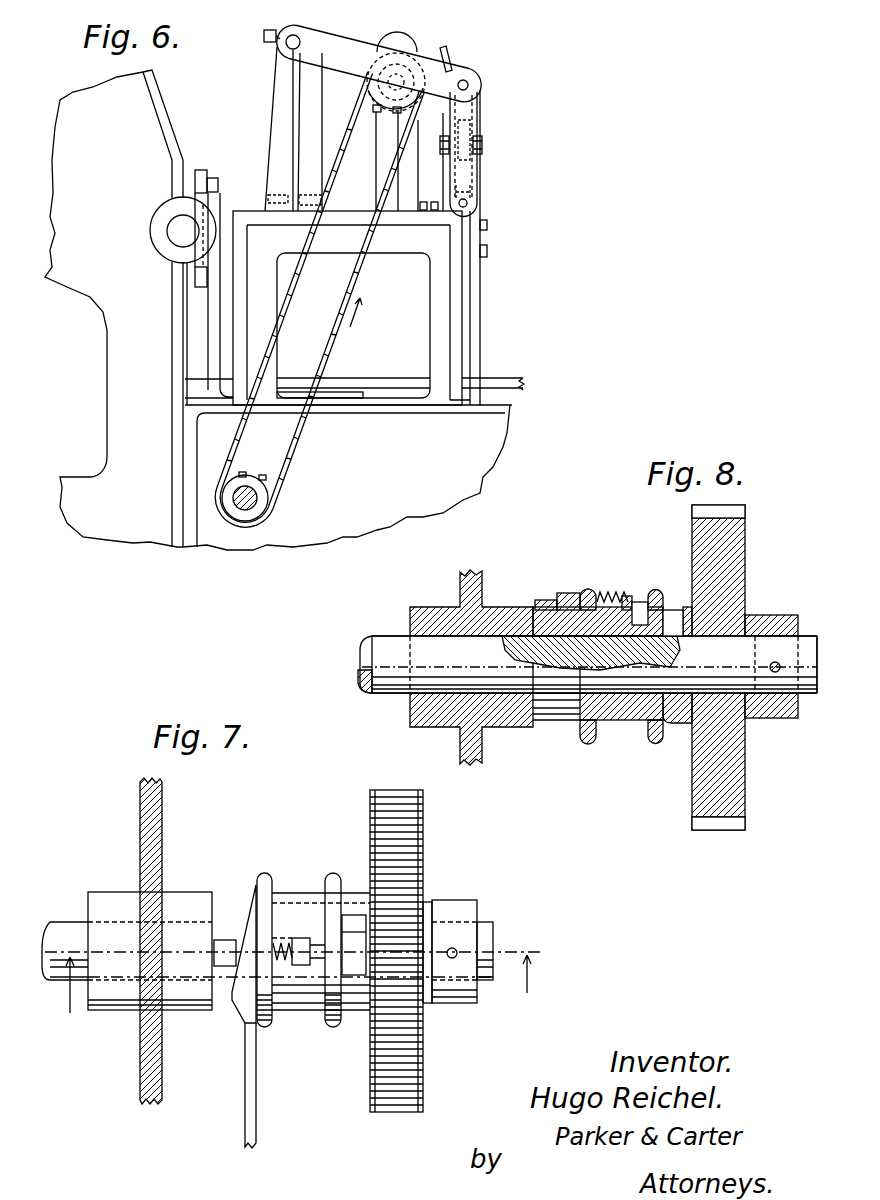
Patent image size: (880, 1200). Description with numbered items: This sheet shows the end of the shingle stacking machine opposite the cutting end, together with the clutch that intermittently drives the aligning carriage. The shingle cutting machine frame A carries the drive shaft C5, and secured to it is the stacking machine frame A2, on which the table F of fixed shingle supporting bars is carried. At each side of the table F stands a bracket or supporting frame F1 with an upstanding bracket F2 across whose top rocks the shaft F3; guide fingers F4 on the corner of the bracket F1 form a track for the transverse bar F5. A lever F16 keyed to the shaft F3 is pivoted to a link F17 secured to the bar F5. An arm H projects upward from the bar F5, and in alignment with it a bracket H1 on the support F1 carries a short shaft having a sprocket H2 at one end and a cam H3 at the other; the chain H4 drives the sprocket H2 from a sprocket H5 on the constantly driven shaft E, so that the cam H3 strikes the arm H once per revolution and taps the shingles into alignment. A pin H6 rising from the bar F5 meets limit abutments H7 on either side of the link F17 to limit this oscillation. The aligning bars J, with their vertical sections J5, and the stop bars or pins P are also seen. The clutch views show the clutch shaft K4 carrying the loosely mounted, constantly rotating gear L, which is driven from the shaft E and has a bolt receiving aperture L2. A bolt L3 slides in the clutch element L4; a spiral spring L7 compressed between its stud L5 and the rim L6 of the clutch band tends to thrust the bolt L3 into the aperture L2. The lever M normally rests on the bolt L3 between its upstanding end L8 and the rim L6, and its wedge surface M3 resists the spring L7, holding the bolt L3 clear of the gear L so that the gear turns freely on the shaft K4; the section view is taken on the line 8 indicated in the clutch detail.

In FIG. 6, the shingle cutting machine frame A is at (113, 423).
In FIG. 6, the stacking machine frame A2 is at (483, 433).
In FIG. 8, the stacking machine frame A2 is at (465, 585).
In FIG. 7, the stacking machine frame A2 is at (143, 828).
In FIG. 6, the drive shaft C5 is at (154, 308).
In FIG. 6, the stop bars or pins P is at (215, 262).
In FIG. 6, the vertical section J5 is at (210, 332).
In FIG. 6, the aligning bars J is at (343, 393).
In FIG. 6, the table F is at (495, 378).
In FIG. 6, the bracket or supporting frame F1 is at (453, 290).
In FIG. 6, the upstanding bracket F2 is at (277, 120).
In FIG. 6, the rock shaft F3 is at (282, 53).
In FIG. 6, the guide fingers F4 is at (477, 178).
In FIG. 6, the transverse bar F5 is at (468, 190).
In FIG. 6, the lever F16 is at (338, 47).
In FIG. 6, the link F17 is at (463, 112).
In FIG. 6, the arm H is at (452, 53).
In FIG. 6, the bracket H1 is at (380, 173).
In FIG. 6, the sprocket H2 is at (367, 95).
In FIG. 6, the cam H3 is at (398, 40).
In FIG. 6, the chain H4 is at (347, 303).
In FIG. 6, the sprocket H5 is at (263, 470).
In FIG. 6, the pin H6 is at (467, 135).
In FIG. 6, the limit abutments H7 is at (440, 143).
In FIG. 6, the shaft E is at (253, 505).
In FIG. 8, the clutch shaft K4 is at (378, 645).
In FIG. 7, the clutch shaft K4 is at (493, 933).
In FIG. 8, the gear L is at (733, 552).
In FIG. 7, the gear L is at (418, 857).
In FIG. 8, the bolt receiving aperture L2 is at (675, 620).
In FIG. 7, the bolt receiving aperture L2 is at (348, 918).
In FIG. 8, the bolt L3 is at (643, 610).
In FIG. 7, the bolt L3 is at (313, 962).
In FIG. 8, the clutch element L4 is at (623, 723).
In FIG. 7, the clutch element L4 is at (287, 1013).
In FIG. 8, the stud L5 is at (628, 595).
In FIG. 7, the stud L5 is at (303, 945).
In FIG. 8, the rim L6 is at (587, 590).
In FIG. 7, the rim L6 is at (265, 875).
In FIG. 8, the spiral spring L7 is at (605, 590).
In FIG. 7, the spiral spring L7 is at (283, 940).
In FIG. 8, the upstanding end L8 is at (537, 602).
In FIG. 7, the upstanding end L8 is at (223, 947).
In FIG. 7, the lever M is at (257, 1110).
In FIG. 8, the wedge surface M3 is at (563, 593).
In FIG. 7, the wedge surface M3 is at (247, 940).
In FIG. 7, the section line 8- 8 is at (292, 1002).